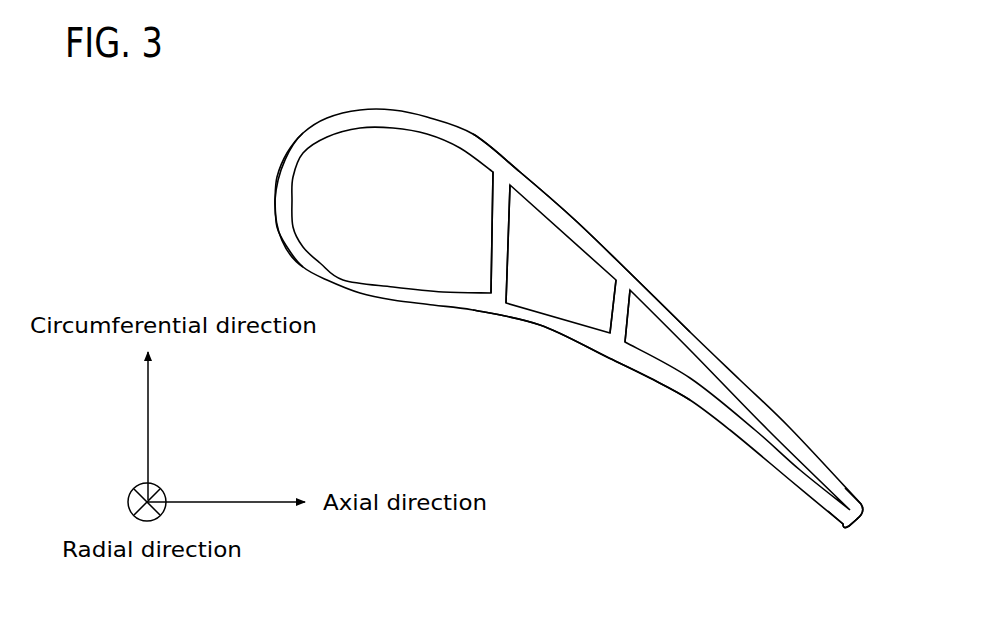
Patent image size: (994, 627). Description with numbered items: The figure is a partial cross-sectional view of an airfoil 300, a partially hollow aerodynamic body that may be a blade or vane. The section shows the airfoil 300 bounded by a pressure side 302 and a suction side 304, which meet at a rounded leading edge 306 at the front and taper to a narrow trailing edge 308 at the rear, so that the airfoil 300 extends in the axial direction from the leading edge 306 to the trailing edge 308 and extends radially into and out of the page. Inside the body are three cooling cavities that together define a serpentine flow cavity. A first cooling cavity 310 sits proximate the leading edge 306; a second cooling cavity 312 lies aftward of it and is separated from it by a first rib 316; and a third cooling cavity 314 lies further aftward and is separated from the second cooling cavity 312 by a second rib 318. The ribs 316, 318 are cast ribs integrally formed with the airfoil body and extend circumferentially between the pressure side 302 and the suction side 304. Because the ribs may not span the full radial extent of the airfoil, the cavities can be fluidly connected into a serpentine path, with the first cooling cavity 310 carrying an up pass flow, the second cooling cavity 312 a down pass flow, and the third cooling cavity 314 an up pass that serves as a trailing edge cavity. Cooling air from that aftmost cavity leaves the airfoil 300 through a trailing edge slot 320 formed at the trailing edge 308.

The airfoil 300 is at (703, 190).
The pressure side 302 is at (607, 358).
The suction side 304 is at (573, 214).
The leading edge 306 is at (275, 185).
The trailing edge 308 is at (861, 520).
The first cooling cavity 310 is at (461, 169).
The second cooling cavity 312 is at (567, 269).
The third cooling cavity 314 is at (659, 340).
The first rib 316 is at (500, 245).
The second rib 318 is at (613, 310).
The trailing edge slot 320 is at (857, 522).